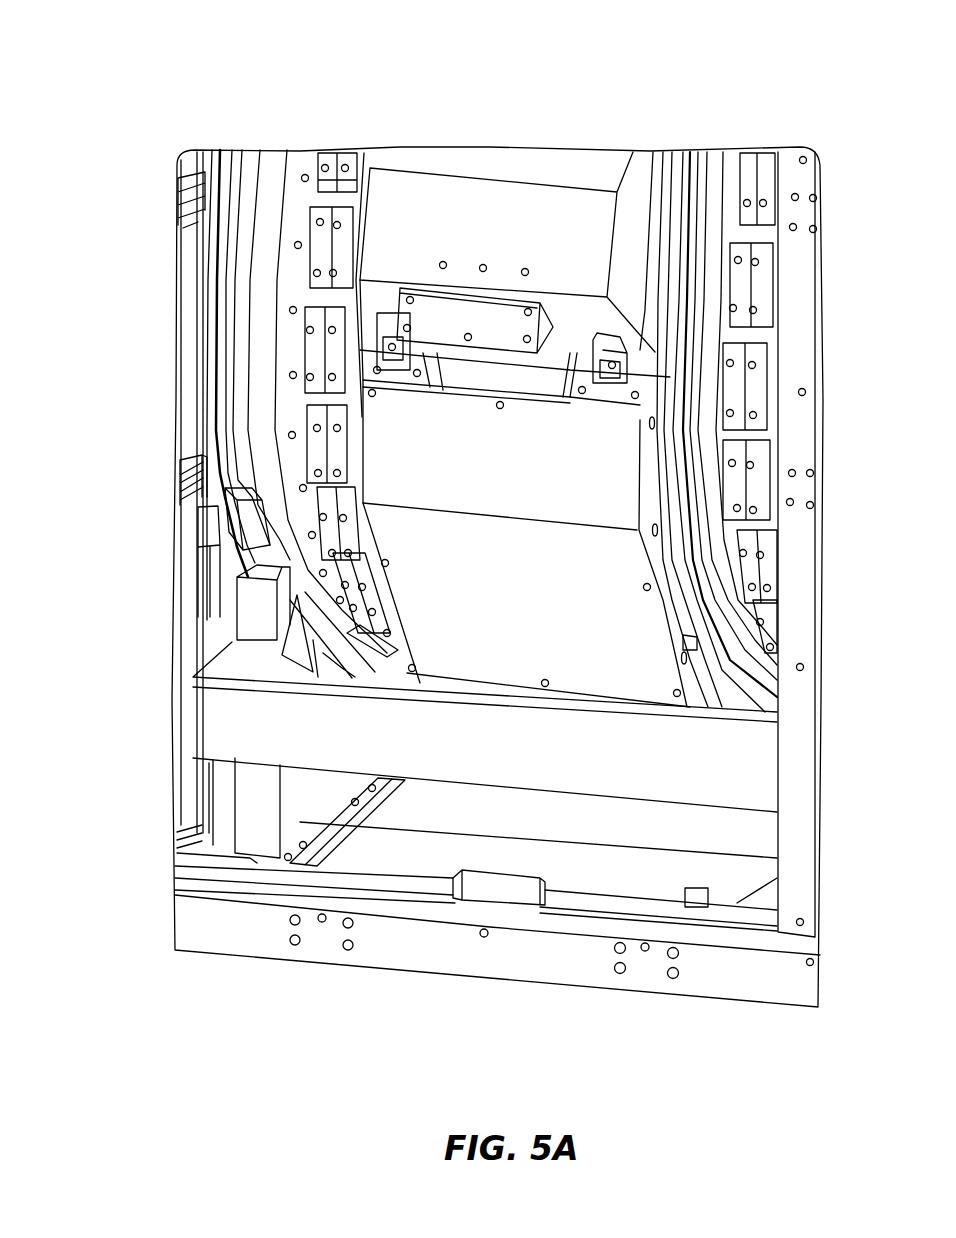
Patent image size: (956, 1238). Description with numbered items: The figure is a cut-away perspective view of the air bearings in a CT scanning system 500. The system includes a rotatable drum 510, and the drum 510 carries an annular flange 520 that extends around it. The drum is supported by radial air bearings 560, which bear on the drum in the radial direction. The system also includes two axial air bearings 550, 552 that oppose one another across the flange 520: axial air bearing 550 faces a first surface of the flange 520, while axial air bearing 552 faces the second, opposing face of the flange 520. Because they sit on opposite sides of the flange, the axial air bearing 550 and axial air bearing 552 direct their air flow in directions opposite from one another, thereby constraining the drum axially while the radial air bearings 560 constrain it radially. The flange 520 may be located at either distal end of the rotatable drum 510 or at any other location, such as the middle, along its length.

The CT scanning system 500 is at (118, 29).
The rotatable drum 510 is at (488, 167).
The annular flange 520 is at (213, 453).
The axial air bearing 550 is at (208, 530).
The axial air bearing 552 is at (253, 508).
The radial air bearings 560 is at (333, 615).